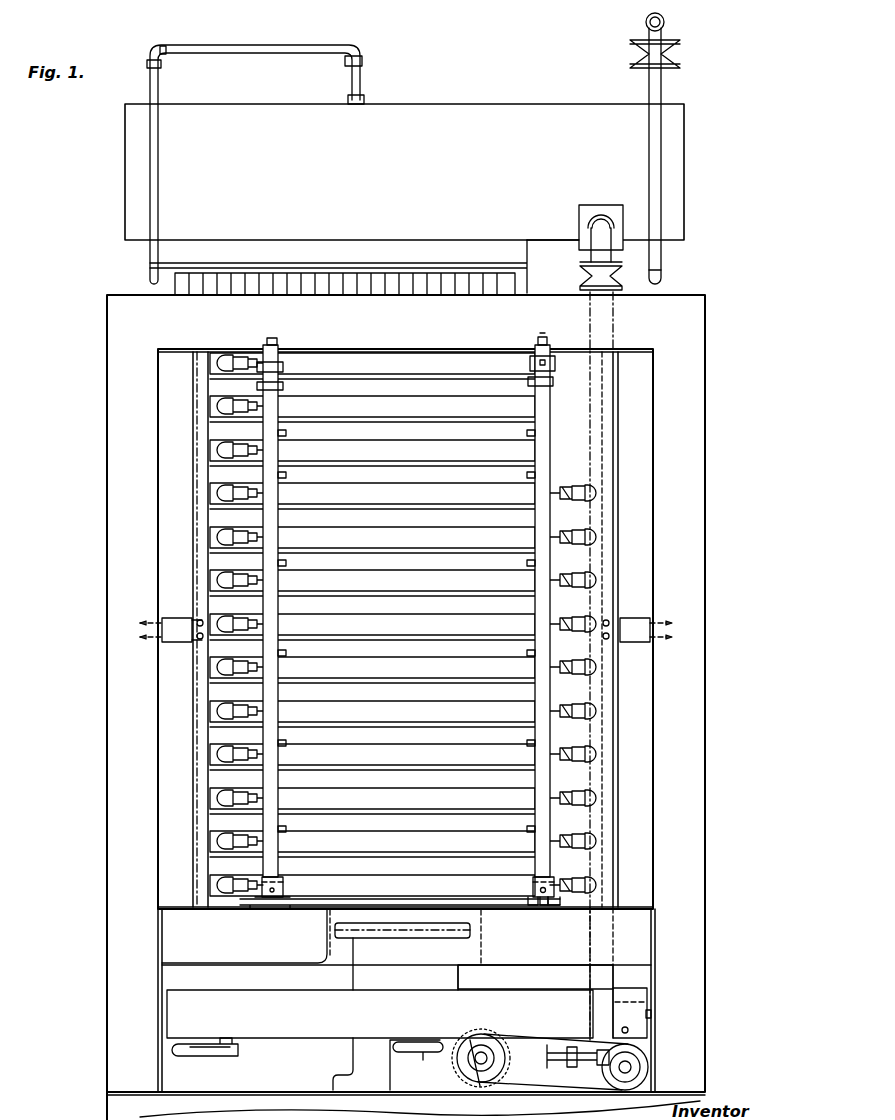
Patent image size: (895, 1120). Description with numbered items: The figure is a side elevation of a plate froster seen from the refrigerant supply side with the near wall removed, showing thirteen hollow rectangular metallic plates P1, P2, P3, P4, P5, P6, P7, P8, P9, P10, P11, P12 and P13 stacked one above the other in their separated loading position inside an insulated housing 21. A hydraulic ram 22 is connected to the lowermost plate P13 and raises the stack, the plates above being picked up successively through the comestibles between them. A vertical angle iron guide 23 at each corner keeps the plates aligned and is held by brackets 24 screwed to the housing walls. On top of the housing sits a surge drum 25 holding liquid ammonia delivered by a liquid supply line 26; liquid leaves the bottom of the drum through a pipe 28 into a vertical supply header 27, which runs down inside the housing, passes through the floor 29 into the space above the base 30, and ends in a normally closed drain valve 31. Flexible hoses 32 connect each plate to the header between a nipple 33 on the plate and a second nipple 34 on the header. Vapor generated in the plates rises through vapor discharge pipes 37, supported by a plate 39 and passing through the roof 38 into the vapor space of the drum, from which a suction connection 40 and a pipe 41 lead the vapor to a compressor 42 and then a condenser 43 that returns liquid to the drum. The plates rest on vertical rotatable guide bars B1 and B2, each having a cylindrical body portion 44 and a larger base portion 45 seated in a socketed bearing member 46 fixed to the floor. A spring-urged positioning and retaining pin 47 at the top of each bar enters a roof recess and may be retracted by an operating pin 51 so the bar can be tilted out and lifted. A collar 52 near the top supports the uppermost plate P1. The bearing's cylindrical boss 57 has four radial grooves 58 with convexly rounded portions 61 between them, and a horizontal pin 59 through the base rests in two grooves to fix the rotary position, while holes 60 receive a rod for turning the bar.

The insulated housing 21 is at (703, 440).
The hydraulic ram 22 is at (440, 983).
The vertical angle iron guide 23 is at (206, 692).
The brackets 24 is at (178, 620).
The surge drum 25 is at (505, 115).
The liquid supply line 26 is at (150, 181).
The vertical supply header 27 is at (607, 384).
The pipe 28 is at (583, 251).
The floor 29 is at (655, 953).
The base 30 is at (120, 1111).
The valve 31 is at (604, 1053).
The flexible conduits or hoses 32 is at (567, 764).
The nipple 33 is at (230, 797).
The second nipple 34 is at (582, 854).
The vapor discharge pipe 37 is at (313, 286).
The roof 38 is at (539, 306).
The plate 39 is at (165, 270).
The suction connection 40 is at (663, 96).
The pipe 41 is at (658, 273).
The compressor 42 is at (652, 1000).
The condenser 43 is at (300, 1025).
The cylindrical body portion 44 is at (279, 869).
The base portion 45 is at (284, 892).
The socketed bearing member 46 is at (263, 906).
The positioning and retaining pin 47 is at (537, 339).
The operating pin 51 is at (527, 380).
The collar 52 is at (529, 365).
The vertical cylindrical boss 57 is at (554, 906).
The radially disposed grooves 58 is at (542, 906).
The horizontal pin 59 is at (528, 898).
The diametrically extending holes 60 is at (540, 887).
The rounded portions 61 is at (532, 904).
The guide bar B1 is at (286, 529).
The guide bar B2 is at (531, 521).
The uppermost plate P1 is at (391, 362).
The plate P2 is at (391, 405).
The plate P3 is at (391, 449).
The plate P4 is at (391, 492).
The plate P5 is at (391, 536).
The plate P6 is at (391, 579).
The plate P7 is at (391, 623).
The plate P8 is at (391, 666).
The plate P9 is at (391, 710).
The plate P10 is at (391, 753).
The plate P11 is at (391, 797).
The plate P12 is at (391, 840).
The lowermost plate P13 is at (391, 884).